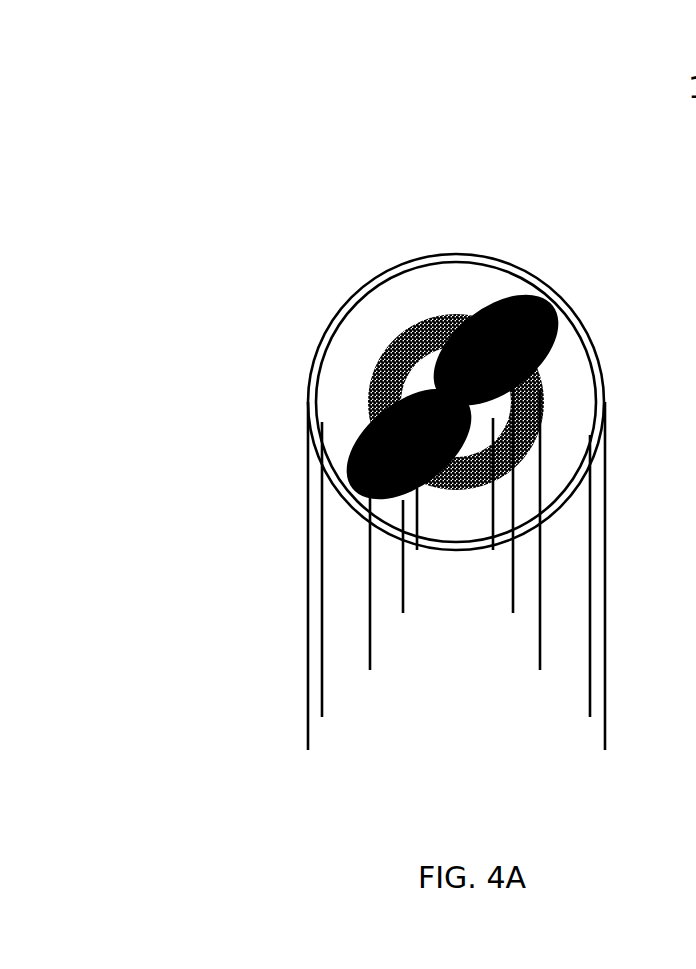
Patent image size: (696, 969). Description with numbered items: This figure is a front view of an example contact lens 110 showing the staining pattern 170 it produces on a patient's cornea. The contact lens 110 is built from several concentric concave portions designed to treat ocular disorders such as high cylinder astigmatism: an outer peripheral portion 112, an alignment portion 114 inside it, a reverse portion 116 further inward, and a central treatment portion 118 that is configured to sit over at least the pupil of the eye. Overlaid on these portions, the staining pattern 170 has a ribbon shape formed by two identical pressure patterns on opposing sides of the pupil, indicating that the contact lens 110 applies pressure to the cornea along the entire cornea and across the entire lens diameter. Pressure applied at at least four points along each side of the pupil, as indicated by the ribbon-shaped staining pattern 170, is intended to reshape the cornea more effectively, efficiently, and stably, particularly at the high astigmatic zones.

The contact lens 110 is at (244, 140).
The peripheral portion 112 is at (437, 249).
The alignment portion 114 is at (510, 282).
The reverse portion 116 is at (542, 390).
The treatment portion 118 is at (398, 375).
The staining pattern 170 is at (541, 305).